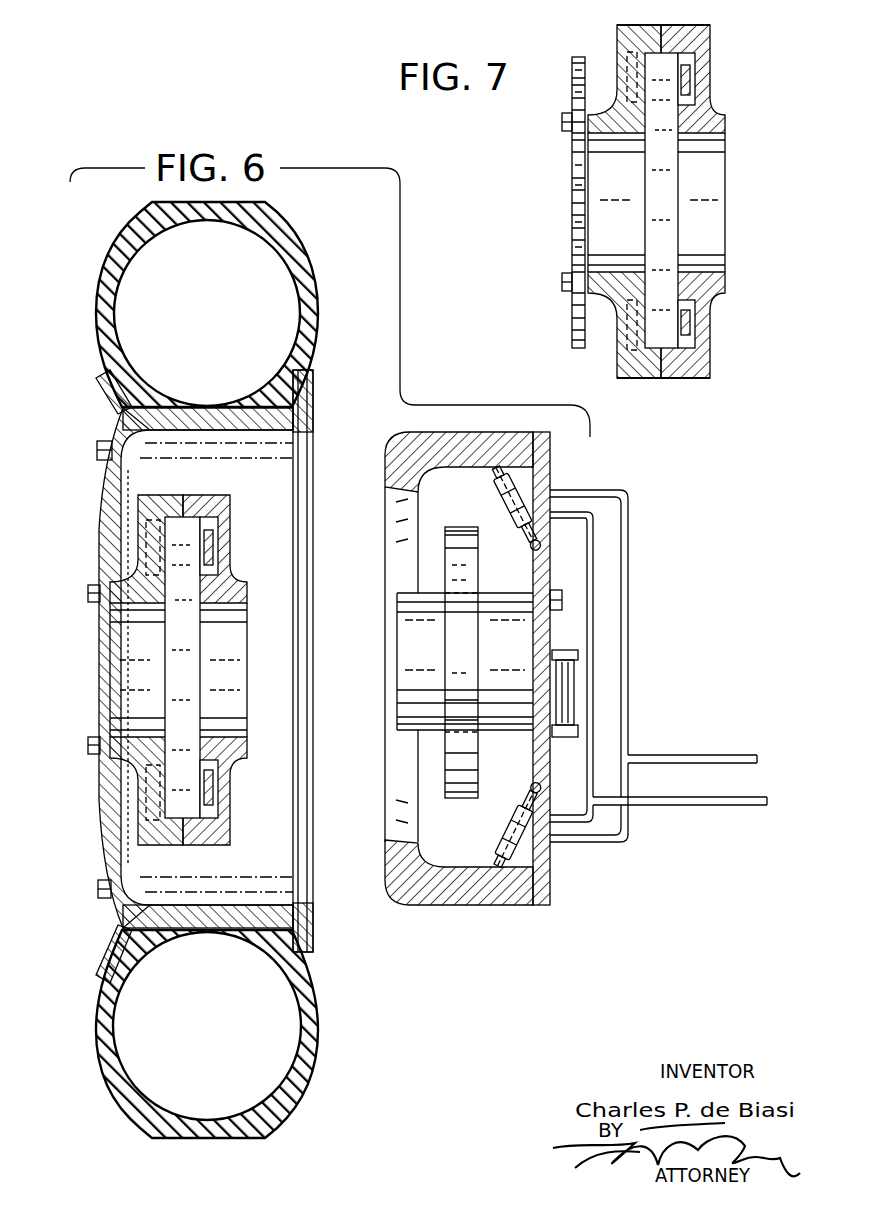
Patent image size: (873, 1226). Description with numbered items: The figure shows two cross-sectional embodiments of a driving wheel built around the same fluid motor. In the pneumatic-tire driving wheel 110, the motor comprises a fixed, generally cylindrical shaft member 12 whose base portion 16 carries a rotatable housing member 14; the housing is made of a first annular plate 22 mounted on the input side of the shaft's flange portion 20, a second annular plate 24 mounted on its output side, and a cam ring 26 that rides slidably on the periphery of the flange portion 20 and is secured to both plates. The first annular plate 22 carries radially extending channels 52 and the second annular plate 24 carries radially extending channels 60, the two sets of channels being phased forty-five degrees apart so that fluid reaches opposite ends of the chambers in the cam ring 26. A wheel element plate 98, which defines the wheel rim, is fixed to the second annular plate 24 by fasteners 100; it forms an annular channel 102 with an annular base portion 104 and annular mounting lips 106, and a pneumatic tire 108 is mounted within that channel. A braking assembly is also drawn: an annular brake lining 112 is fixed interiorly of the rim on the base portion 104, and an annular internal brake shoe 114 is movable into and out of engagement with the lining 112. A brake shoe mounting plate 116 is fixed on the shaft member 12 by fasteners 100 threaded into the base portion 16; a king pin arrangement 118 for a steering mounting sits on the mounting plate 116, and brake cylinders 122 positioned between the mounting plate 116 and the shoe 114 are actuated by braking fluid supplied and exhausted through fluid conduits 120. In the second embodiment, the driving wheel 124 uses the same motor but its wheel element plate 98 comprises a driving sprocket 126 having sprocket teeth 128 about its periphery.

In FIG. 6, the shaft member 12 is at (405, 729).
In FIG. 6, the housing member 14 is at (255, 682).
In FIG. 7, the housing member 14 is at (726, 225).
In FIG. 6, the base portion 16 is at (405, 652).
In FIG. 6, the flange portion 20 is at (468, 533).
In FIG. 6, the first annular plate 22 is at (228, 605).
In FIG. 7, the first annular plate 22 is at (713, 40).
In FIG. 6, the second annular plate 24 is at (143, 605).
In FIG. 7, the second annular plate 24 is at (617, 134).
In FIG. 6, the cam ring 26 is at (185, 496).
In FIG. 7, the cam ring 26 is at (662, 25).
In FIG. 6, the radially extending channels 52 is at (203, 528).
In FIG. 7, the radially extending channels 52 is at (690, 63).
In FIG. 6, the radially extending channels 60 is at (148, 547).
In FIG. 7, the radially extending channels 60 is at (627, 62).
In FIG. 6, the wheel element plate 98 is at (98, 673).
In FIG. 7, the wheel element plate 98 is at (572, 230).
In FIG. 6, the fasteners 100 is at (95, 592).
In FIG. 7, the fasteners 100 is at (562, 285).
In FIG. 6, the annular channel 102 is at (210, 387).
In FIG. 6, the annular base portion 104 is at (207, 395).
In FIG. 6, the annular mounting lips 106 is at (100, 386).
In FIG. 6, the pneumatic tire 108 is at (310, 268).
In FIG. 6, the driving wheel 110 is at (353, 435).
In FIG. 6, the annular brake lining 112 is at (253, 433).
In FIG. 6, the annular internal brake shoe 114 is at (400, 462).
In FIG. 6, the brake shoe mounting plate 116 is at (543, 478).
In FIG. 6, the king pin arrangement 118 is at (573, 653).
In FIG. 6, the fluid conduits 120 is at (693, 800).
In FIG. 6, the brake cylinders 122 is at (515, 522).
In FIG. 7, the driving wheel 124 is at (553, 207).
In FIG. 7, the driving sprocket 126 is at (570, 168).
In FIG. 7, the sprocket teeth 128 is at (572, 63).